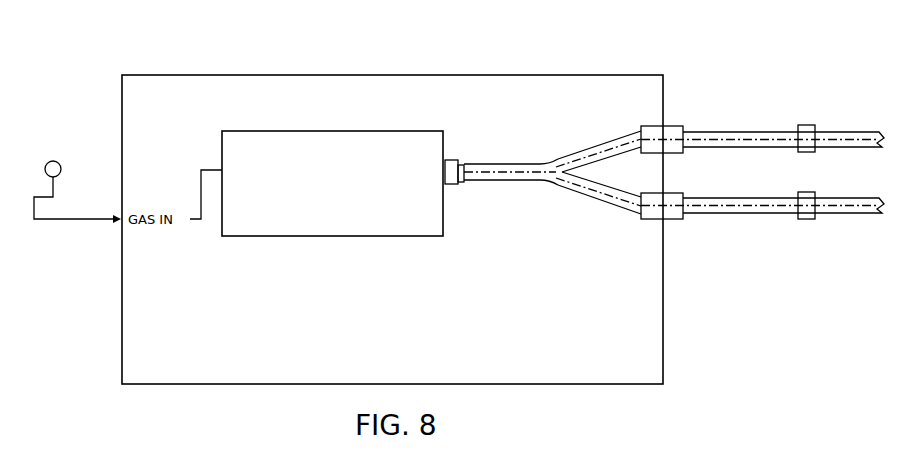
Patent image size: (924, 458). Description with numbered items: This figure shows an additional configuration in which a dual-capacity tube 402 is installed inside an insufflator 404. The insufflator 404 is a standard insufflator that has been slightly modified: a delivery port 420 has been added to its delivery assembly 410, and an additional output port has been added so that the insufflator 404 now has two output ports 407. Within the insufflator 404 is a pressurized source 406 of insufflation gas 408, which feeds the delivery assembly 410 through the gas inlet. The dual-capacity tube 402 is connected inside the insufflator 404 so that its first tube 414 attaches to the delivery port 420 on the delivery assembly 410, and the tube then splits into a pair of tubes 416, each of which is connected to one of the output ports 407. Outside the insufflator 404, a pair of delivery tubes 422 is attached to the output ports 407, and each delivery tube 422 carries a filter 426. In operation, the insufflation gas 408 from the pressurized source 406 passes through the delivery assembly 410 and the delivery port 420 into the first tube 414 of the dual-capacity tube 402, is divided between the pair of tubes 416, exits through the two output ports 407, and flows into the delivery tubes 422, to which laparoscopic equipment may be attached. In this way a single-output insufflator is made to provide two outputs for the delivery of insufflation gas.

The insufflator 404 is at (528, 48).
The pressurized source 406 is at (57, 161).
The insufflation gas 408 is at (69, 222).
The delivery assembly 410 is at (269, 212).
The delivery port 420 is at (450, 161).
The first tube 414 is at (463, 183).
The dual-capacity tube 402 is at (498, 163).
The pair of tubes 416 is at (598, 150).
The output ports 407 is at (673, 132).
The delivery tubes 422 is at (743, 134).
The filter 426 is at (802, 132).